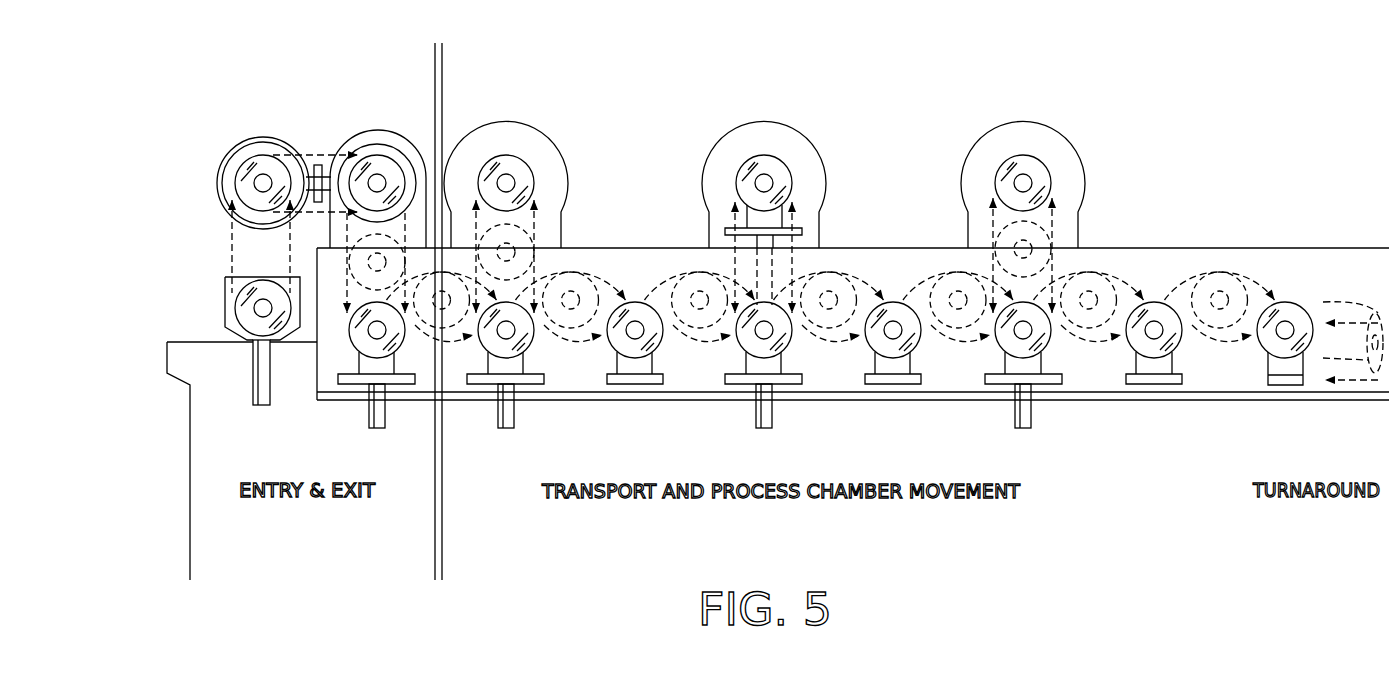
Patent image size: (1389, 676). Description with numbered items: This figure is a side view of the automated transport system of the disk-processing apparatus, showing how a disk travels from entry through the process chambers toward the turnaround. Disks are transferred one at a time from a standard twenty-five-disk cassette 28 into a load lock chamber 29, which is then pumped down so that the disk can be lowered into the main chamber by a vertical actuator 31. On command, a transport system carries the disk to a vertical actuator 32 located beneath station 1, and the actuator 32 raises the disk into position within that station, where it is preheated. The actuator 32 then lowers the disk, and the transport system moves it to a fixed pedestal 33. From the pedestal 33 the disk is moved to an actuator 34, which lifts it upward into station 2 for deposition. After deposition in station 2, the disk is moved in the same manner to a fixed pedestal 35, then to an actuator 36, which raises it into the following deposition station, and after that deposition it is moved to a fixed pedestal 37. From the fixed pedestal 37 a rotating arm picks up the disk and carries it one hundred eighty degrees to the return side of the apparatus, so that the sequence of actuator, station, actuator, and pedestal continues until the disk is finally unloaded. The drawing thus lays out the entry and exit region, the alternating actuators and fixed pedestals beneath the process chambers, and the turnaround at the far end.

The station 1 is at (527, 122).
The station 2 is at (773, 121).
The 25-disk cassette 28 is at (225, 311).
The load lock chamber 29 is at (362, 130).
The vertical actuator 31 is at (372, 368).
The vertical actuator 32 is at (502, 367).
The fixed pedestal 33 is at (630, 368).
The actuator 34 is at (753, 366).
The fixed pedestal 35 is at (887, 368).
The actuator 36 is at (1015, 368).
The fixed pedestal 37 is at (1147, 370).